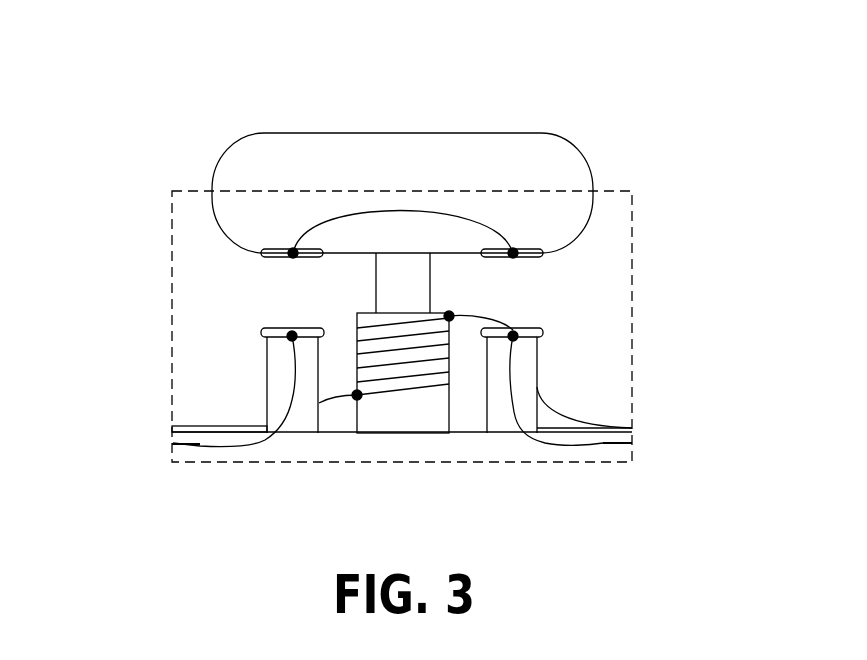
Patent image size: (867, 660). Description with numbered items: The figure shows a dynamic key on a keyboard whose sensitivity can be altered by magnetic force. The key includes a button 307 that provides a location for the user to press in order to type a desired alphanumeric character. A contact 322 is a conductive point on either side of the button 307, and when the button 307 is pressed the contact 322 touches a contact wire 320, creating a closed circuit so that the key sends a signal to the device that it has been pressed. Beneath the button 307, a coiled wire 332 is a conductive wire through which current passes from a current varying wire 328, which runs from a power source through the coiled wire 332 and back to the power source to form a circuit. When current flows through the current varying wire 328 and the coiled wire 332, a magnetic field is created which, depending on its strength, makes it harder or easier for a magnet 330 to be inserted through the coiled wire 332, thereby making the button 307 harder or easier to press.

The button 307 is at (260, 133).
The contact wire 320 is at (607, 445).
The contact 322 is at (543, 256).
The current varying wire 328 is at (213, 426).
The magnet 330 is at (376, 253).
The coiled wire 332 is at (370, 340).